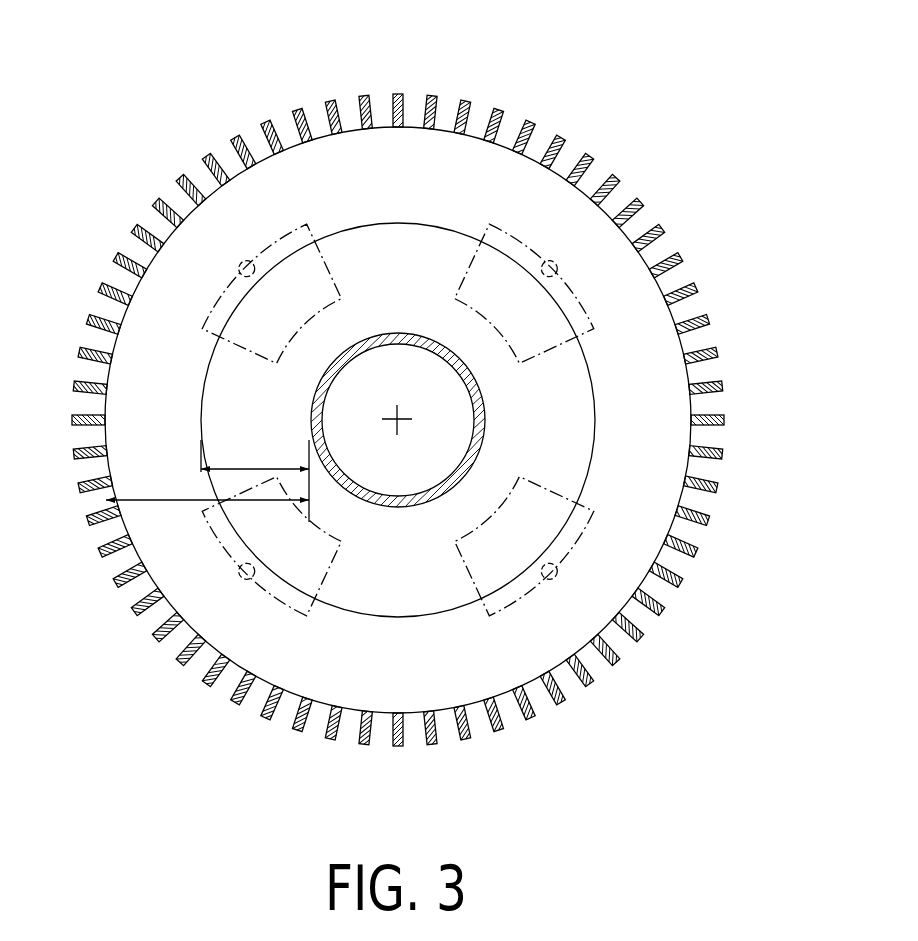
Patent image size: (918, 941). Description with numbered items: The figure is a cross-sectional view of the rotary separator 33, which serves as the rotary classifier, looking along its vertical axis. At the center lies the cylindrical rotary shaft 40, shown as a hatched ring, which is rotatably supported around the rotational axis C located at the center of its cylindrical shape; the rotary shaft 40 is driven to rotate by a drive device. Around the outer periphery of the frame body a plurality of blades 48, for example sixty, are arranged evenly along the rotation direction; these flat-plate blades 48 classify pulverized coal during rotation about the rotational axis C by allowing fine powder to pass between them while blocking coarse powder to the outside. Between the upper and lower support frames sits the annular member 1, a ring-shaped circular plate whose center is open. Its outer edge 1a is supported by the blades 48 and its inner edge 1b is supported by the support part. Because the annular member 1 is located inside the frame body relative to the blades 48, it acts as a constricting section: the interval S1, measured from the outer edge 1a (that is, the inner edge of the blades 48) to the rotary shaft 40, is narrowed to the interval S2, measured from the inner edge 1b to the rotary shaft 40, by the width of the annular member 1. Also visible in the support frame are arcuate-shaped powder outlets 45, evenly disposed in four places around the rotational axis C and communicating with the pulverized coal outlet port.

The rotary separator 33 is at (590, 69).
The annular member 1 is at (353, 688).
The outer edge 1a is at (503, 700).
The inner edge 1b is at (419, 612).
The blades 48 is at (500, 108).
The rotary shaft 40 is at (477, 380).
The rotational axis C is at (398, 419).
The powder outlets 45 is at (240, 266).
The interval S1 is at (207, 488).
The interval S2 is at (255, 481).